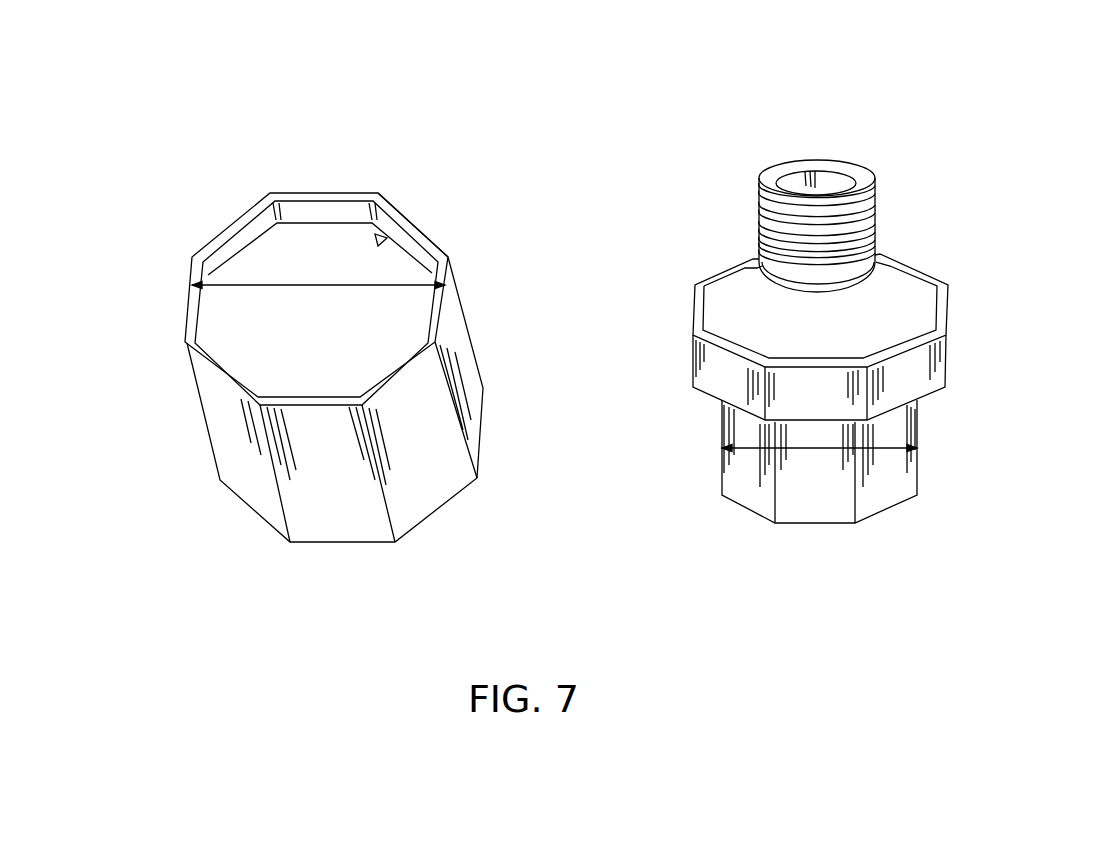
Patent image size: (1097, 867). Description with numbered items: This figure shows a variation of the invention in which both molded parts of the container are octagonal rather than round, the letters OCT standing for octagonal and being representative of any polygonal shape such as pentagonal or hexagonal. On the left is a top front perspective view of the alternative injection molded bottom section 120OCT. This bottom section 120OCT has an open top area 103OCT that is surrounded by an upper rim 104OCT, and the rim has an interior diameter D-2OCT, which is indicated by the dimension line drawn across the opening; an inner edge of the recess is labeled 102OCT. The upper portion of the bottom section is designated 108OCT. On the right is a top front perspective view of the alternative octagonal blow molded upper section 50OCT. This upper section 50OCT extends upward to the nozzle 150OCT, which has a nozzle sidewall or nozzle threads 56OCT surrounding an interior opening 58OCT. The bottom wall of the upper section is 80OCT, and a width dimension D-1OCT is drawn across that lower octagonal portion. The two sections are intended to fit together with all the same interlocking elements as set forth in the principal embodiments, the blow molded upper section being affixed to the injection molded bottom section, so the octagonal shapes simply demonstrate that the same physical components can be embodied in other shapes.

The blow molded upper section 50OCT is at (1005, 337).
The nozzle threads 56OCT is at (878, 206).
The interior opening 58OCT is at (842, 178).
The bottom wall 80OCT is at (890, 507).
The nozzle 150OCT is at (802, 128).
The injection molded bottom section 120OCT is at (186, 462).
The inner octagonal recess 102OCT is at (380, 241).
The open top area 103OCT is at (408, 311).
The upper rim 104OCT is at (322, 192).
The upper portion 108OCT is at (418, 177).
The width dimension of octagonal body D-1OCT is at (798, 450).
The interior diameter D-2OCT is at (250, 285).